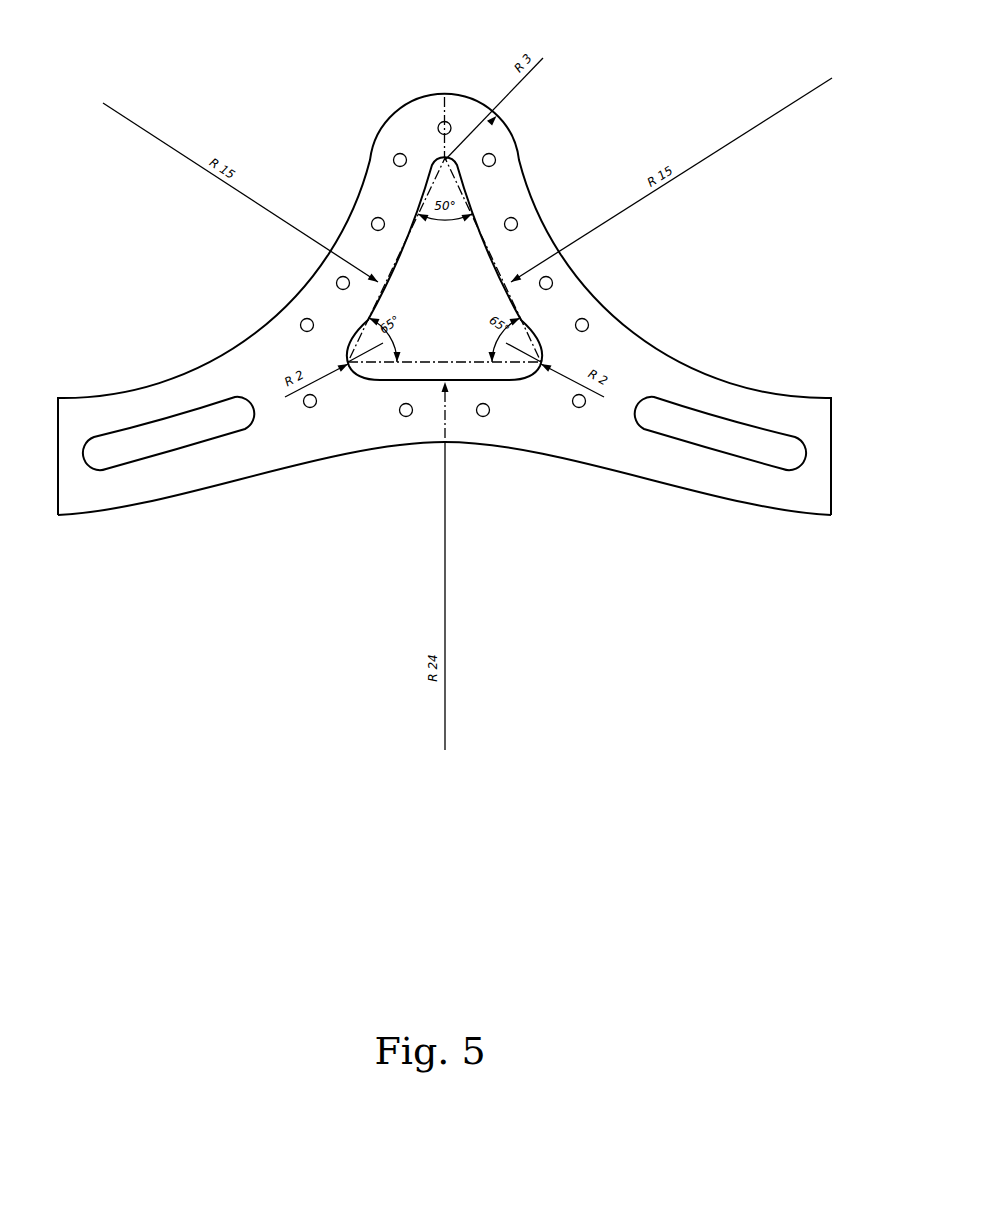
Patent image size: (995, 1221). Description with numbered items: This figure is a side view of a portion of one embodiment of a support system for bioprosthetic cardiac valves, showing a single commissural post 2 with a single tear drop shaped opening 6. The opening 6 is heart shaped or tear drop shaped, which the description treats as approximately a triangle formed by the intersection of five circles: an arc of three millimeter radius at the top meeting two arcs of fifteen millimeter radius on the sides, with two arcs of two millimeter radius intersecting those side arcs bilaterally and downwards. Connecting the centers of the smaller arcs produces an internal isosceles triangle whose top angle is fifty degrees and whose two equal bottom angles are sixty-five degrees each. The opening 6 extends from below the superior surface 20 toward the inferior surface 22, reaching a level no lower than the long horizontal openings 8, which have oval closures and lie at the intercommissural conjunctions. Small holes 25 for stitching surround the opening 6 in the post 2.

The commissural post 2 is at (439, 87).
The tear drop shaped opening 6 is at (444, 268).
The long horizontal openings 8 is at (444, 433).
The superior surface of the support system 20 is at (733, 380).
The inferior surface of the support system 22 is at (620, 487).
The small holes for stitching 25 is at (553, 282).